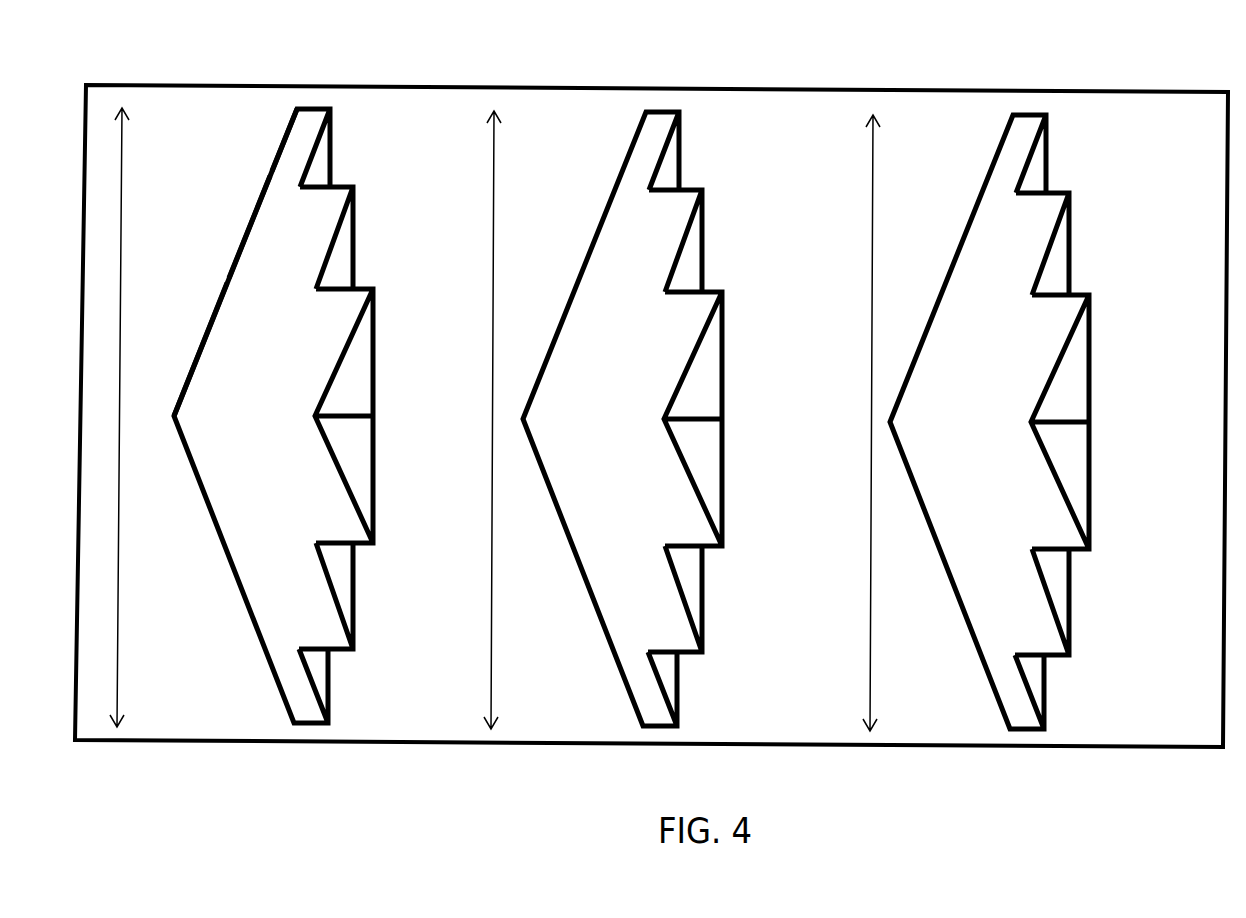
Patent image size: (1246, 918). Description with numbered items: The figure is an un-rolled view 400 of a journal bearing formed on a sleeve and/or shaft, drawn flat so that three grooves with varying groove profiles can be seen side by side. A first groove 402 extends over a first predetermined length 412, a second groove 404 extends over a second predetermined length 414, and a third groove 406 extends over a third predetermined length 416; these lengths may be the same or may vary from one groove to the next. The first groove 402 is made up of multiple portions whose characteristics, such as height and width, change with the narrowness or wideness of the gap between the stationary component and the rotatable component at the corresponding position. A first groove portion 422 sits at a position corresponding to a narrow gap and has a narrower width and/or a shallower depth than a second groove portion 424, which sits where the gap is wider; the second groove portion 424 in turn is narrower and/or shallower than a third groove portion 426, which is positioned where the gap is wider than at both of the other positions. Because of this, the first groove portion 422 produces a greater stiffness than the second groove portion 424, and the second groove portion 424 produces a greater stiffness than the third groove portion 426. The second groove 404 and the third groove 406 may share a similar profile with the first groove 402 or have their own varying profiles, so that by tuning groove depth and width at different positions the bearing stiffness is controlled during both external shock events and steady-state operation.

The un-rolled view 400 is at (1140, 72).
The first groove 402 is at (293, 608).
The second groove 404 is at (642, 613).
The third groove 406 is at (1010, 612).
The first predetermined length 412 is at (121, 417).
The second predetermined length 414 is at (497, 420).
The third predetermined length 416 is at (876, 423).
The first groove portion 422 is at (254, 139).
The second groove portion 424 is at (216, 226).
The third groove portion 426 is at (184, 346).